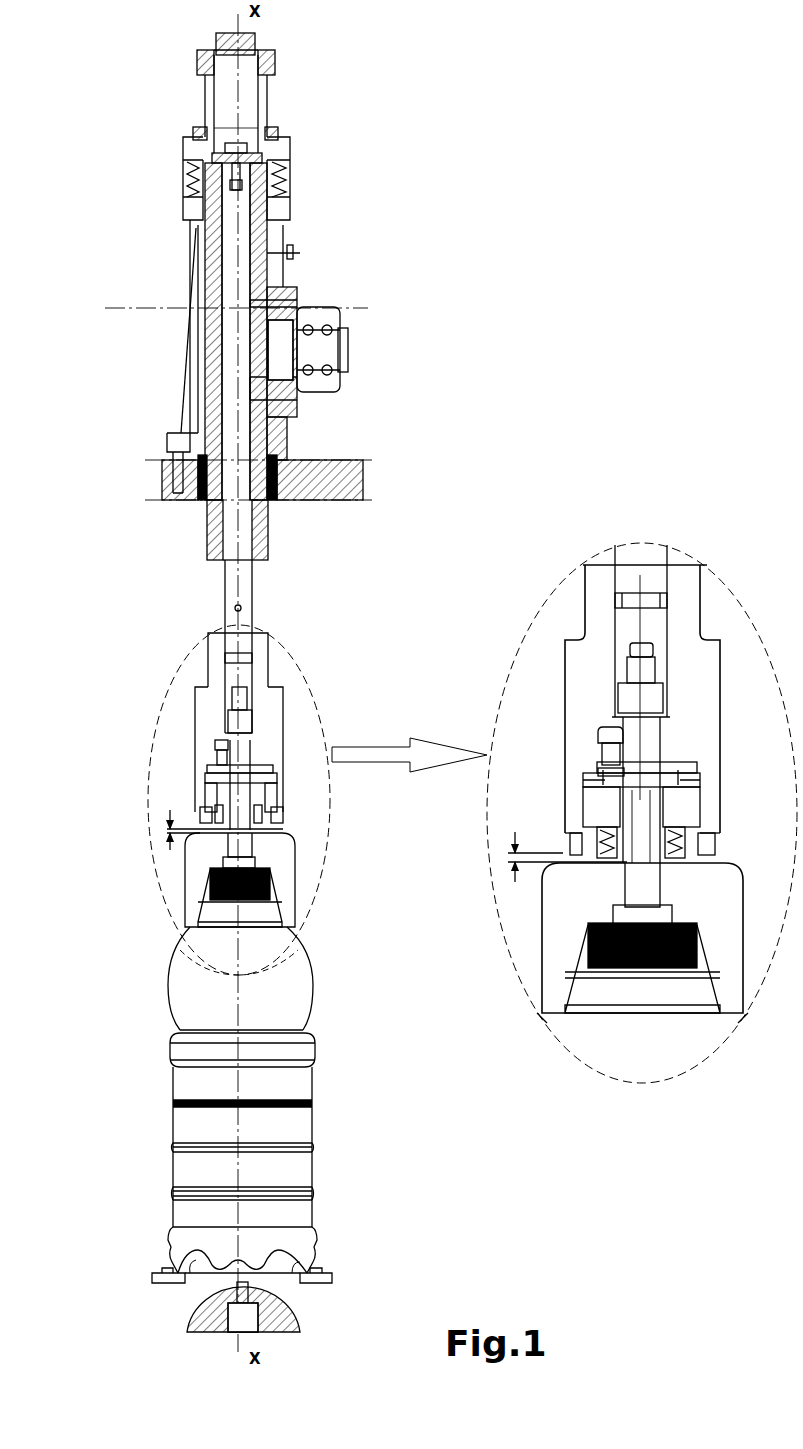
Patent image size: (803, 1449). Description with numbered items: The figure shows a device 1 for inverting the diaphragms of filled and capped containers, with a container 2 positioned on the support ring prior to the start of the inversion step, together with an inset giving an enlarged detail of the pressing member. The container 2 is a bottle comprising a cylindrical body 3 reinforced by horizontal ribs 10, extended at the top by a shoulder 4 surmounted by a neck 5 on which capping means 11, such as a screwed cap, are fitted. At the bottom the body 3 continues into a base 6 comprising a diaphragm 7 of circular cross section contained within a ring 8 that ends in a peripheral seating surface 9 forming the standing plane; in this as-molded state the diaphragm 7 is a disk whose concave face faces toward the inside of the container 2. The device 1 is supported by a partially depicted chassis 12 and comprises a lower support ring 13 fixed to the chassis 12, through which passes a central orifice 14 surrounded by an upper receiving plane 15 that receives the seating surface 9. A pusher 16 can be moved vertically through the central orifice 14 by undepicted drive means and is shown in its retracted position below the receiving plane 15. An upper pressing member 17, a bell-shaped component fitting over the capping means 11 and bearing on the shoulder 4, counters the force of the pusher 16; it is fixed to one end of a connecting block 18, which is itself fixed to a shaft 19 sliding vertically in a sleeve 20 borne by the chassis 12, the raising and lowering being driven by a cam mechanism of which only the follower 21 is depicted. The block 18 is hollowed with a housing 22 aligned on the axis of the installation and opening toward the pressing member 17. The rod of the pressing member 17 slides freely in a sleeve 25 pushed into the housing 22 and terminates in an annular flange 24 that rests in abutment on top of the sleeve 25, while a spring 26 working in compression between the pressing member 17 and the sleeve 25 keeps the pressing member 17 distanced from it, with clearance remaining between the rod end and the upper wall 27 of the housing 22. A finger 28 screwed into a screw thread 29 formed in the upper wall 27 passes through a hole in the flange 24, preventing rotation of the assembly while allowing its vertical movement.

The device 1 is at (135, 606).
The container 2 is at (155, 1124).
The body 3 is at (305, 1114).
The shoulder 4 is at (290, 967).
The neck 5 is at (283, 920).
The base 6 is at (318, 1253).
The diaphragm 7 is at (242, 1283).
The ring 8 is at (168, 1266).
The seating surface 9 is at (196, 1281).
The horizontal ribs 10 is at (310, 1193).
The capping means 11 is at (267, 885).
The chassis 12 is at (357, 478).
The support ring 13 is at (333, 1283).
The central orifice 14 is at (290, 1283).
The upper receiving plane 15 is at (330, 1275).
The pusher 16 is at (300, 1331).
The pressing member 17 is at (283, 843).
The connecting block 18 is at (268, 703).
The shaft 19 is at (243, 584).
The sleeve 20 is at (268, 536).
The follower 21 is at (341, 313).
The housing 22 is at (697, 779).
The annular flange 24 is at (680, 778).
The sleeve 25 is at (687, 806).
The spring 26 is at (673, 844).
The upper wall 27 is at (680, 761).
The finger 28 is at (615, 771).
The screw thread 29 is at (598, 746).